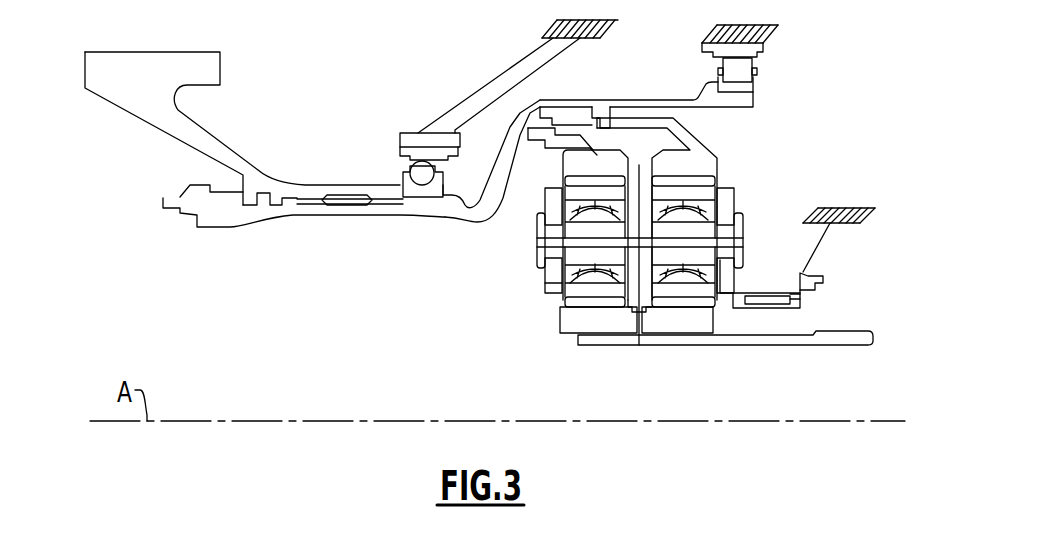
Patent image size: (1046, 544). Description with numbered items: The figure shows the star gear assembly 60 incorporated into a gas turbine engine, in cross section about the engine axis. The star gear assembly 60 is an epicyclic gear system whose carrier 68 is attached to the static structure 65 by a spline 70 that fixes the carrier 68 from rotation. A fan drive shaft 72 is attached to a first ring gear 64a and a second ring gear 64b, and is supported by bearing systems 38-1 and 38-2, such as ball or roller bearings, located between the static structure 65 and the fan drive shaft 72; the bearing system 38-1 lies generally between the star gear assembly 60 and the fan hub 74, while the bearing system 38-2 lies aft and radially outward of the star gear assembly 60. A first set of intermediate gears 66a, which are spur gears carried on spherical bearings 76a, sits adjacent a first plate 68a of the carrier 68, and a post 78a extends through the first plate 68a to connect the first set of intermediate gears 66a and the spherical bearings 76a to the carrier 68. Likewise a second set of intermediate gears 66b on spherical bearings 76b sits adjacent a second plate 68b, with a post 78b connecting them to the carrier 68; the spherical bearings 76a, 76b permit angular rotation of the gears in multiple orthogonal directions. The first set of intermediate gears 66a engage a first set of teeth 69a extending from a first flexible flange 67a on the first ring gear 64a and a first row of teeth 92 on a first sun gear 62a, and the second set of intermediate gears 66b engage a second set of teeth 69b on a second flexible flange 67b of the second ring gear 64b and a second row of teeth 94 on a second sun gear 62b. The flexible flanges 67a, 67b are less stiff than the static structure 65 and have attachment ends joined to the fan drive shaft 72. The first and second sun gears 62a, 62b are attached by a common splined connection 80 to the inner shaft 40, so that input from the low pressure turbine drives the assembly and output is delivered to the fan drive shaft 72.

The bearing system 38-1 is at (392, 162).
The bearing system 38-2 is at (771, 70).
The inner shaft 40 is at (799, 345).
The star gear assembly 60 is at (440, 326).
The first sun gear 62a is at (572, 316).
The second sun gear 62b is at (709, 320).
The first ring gear 64a is at (560, 157).
The second ring gear 64b is at (700, 137).
The static structure 65 is at (542, 38).
The first set of intermediate gears 66a is at (566, 294).
The second set of intermediate gears 66b is at (712, 220).
The first flexible flange 67a is at (583, 140).
The second flexible flange 67b is at (690, 122).
The carrier 68 is at (731, 311).
The first plate 68a is at (545, 283).
The second plate 68b is at (740, 278).
The first set of teeth 69a is at (600, 178).
The second set of teeth 69b is at (670, 180).
The spline 70 is at (802, 299).
The fan drive shaft 72 is at (343, 226).
The fan hub 74 is at (221, 63).
The spherical bearings 76a is at (592, 218).
The spherical bearings 76b is at (728, 220).
The post 78a is at (545, 257).
The post 78b is at (738, 232).
The common splined connection 80 is at (637, 335).
The first row of teeth 92 is at (594, 302).
The second row of teeth 94 is at (706, 304).